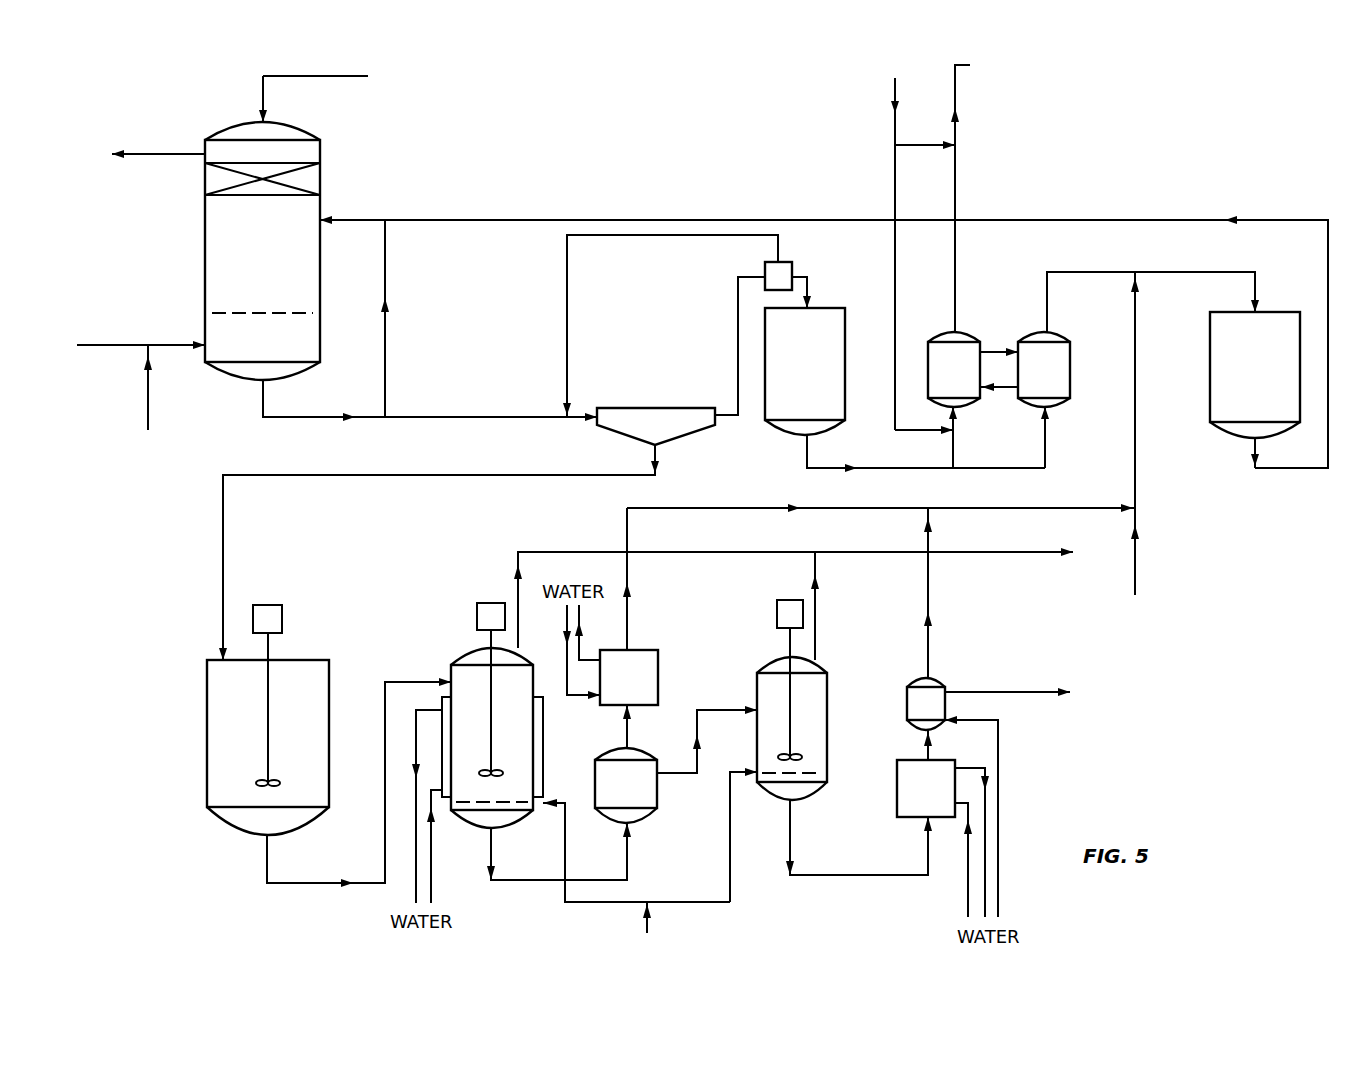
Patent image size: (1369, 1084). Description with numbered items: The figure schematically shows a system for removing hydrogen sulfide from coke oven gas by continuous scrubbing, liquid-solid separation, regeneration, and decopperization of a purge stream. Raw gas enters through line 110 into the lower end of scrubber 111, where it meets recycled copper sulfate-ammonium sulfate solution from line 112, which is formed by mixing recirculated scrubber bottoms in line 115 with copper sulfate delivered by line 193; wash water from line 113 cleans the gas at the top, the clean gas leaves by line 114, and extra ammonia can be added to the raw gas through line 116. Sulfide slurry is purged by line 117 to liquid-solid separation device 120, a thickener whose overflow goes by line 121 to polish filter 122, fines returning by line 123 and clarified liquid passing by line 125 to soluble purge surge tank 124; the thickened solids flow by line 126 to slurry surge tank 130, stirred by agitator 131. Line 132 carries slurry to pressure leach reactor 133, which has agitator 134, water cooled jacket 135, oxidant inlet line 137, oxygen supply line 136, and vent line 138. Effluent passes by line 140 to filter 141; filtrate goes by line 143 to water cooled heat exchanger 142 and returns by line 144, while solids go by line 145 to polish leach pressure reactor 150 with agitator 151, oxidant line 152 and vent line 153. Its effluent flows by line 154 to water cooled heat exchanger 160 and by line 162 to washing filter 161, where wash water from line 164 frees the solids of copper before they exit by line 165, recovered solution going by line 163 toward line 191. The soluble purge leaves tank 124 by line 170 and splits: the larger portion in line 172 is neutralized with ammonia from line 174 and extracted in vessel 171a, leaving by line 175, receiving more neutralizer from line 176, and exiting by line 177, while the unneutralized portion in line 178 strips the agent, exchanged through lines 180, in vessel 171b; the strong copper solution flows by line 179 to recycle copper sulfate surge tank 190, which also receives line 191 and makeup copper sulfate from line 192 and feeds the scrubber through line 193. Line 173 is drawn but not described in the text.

The line 110 is at (113, 345).
The scrubber 111 is at (205, 242).
The line 112 is at (353, 220).
The line 113 is at (347, 78).
The line 114 is at (162, 152).
The line 115 is at (385, 362).
The line 116 is at (148, 393).
The purge line 117 is at (498, 416).
The liquid-solid separation device 120 is at (668, 410).
The line 121 is at (738, 340).
The polish filter 122 is at (790, 262).
The line 123 is at (567, 322).
The soluble purge surge tank 124 is at (777, 432).
The line 125 is at (810, 292).
The line 126 is at (503, 475).
The slurry surge tank 130 is at (207, 770).
The agitator 131 is at (282, 618).
The line 132 is at (385, 845).
The pressure leach reactor 133 is at (455, 657).
The agitator 134 is at (477, 612).
The water cooled jacket 135 is at (543, 745).
The line 136 is at (650, 933).
The line 137 is at (590, 902).
The line 138 is at (558, 552).
The line 140 is at (538, 882).
The filter 141 is at (647, 822).
The water cooled heat exchanger 142 is at (660, 668).
The line 143 is at (630, 735).
The line 144 is at (630, 624).
The line 145 is at (730, 708).
The polish leach pressure reactor 150 is at (827, 708).
The agitator 151 is at (782, 600).
The line 152 is at (731, 873).
The line 153 is at (817, 612).
The line 154 is at (870, 875).
The water cooled heat exchanger 160 is at (897, 797).
The washing filter 161 is at (945, 688).
The line 162 is at (928, 748).
The line 163 is at (930, 642).
The line 164 is at (1000, 750).
The line 165 is at (1025, 692).
The line 170 is at (833, 470).
The vessel 171a is at (965, 333).
The vessel 171b is at (1050, 333).
The line 172 is at (953, 452).
The ammonia supply line 173 is at (895, 90).
The line 174 is at (895, 313).
The line 175 is at (957, 188).
The line 176 is at (921, 148).
The line 177 is at (957, 88).
The line 178 is at (1047, 452).
The line 179 is at (1087, 272).
The lines 180 is at (1005, 365).
The recycle copper sulfate surge tank 190 is at (1217, 425).
The line 191 is at (1008, 507).
The line 192 is at (1137, 578).
The line 193 is at (1173, 220).